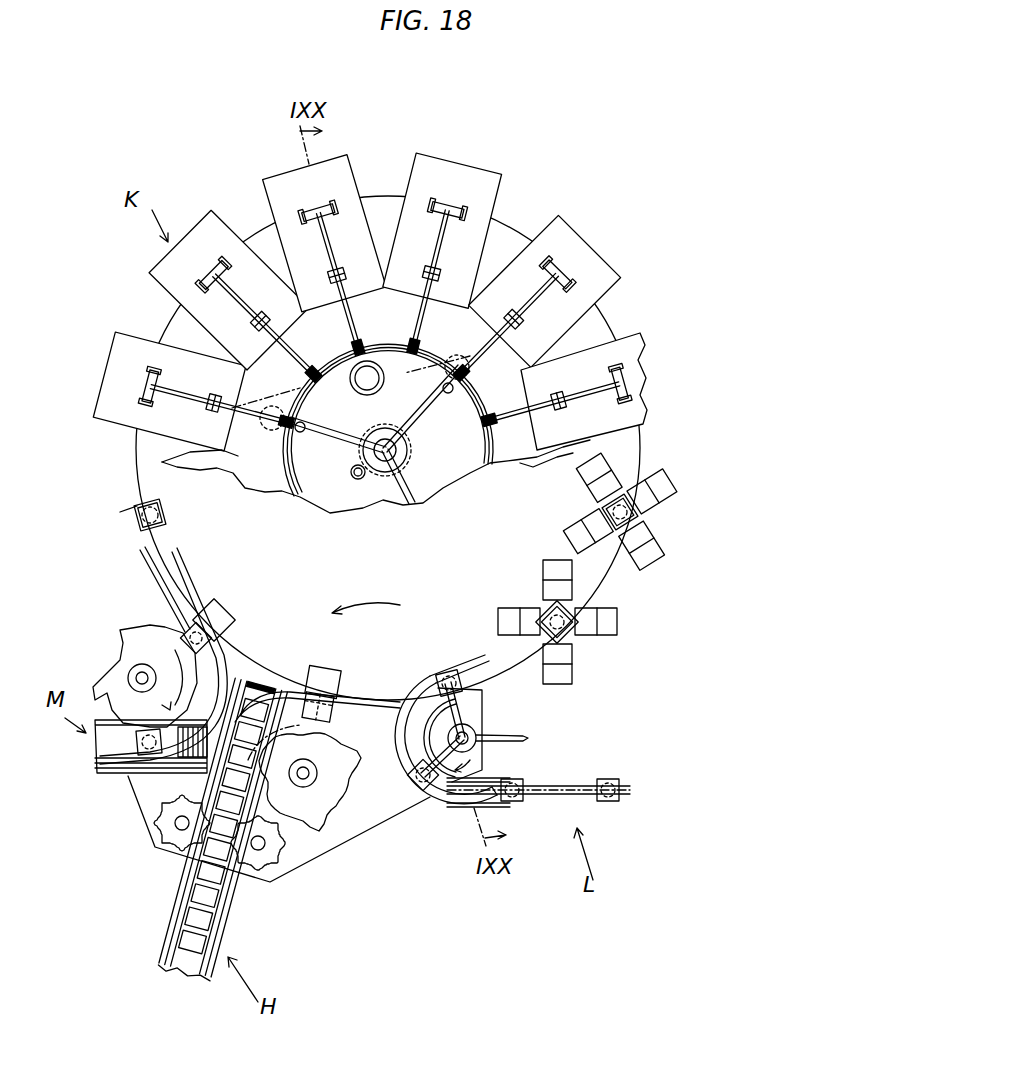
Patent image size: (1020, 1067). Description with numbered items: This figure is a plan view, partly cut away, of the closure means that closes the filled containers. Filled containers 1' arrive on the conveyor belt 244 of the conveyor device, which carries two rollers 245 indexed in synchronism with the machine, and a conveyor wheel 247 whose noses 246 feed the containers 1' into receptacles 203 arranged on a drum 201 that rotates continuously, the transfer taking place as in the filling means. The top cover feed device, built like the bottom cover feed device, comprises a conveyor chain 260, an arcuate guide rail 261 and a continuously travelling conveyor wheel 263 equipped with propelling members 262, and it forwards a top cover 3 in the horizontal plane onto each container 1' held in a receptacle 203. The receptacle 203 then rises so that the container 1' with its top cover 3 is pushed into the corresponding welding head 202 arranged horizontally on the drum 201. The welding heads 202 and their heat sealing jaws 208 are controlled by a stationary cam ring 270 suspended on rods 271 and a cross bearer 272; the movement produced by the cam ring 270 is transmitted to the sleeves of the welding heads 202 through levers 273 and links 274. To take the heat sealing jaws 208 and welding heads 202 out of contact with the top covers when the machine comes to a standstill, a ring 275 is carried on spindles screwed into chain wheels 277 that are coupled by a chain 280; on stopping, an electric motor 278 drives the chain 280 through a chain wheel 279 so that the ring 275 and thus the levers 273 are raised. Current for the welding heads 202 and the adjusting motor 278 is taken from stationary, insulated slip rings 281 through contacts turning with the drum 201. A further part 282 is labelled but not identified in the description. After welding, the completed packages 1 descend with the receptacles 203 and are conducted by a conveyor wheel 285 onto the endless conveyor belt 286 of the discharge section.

The drum 201 is at (147, 467).
The welding heads 202 is at (280, 196).
The receptacles 203 is at (223, 614).
The heat sealing jaws 208 is at (597, 488).
The conveyor belt 244 is at (185, 968).
The rollers 245 is at (172, 842).
The noses 246 is at (368, 770).
The conveyor wheel 247 is at (341, 800).
The conveyor chain 260 is at (574, 786).
The arcuate guide rail 261 is at (438, 805).
The propelling members 262 is at (465, 716).
The conveyor wheel 263 is at (478, 736).
The cam ring 270 is at (331, 490).
The rods 271 is at (303, 434).
The cross bearer 272 is at (341, 437).
The levers 273 is at (360, 313).
The links 274 is at (346, 234).
The ring 275 is at (291, 472).
The chain wheels 277 is at (272, 406).
The electric motor 278 is at (374, 392).
The chain wheel 279 is at (370, 360).
The chain 280 is at (407, 448).
The slip rings 281 is at (404, 460).
The pin 282 is at (366, 481).
The conveyor wheel 285 is at (126, 643).
The endless conveyor belt 286 is at (97, 770).
The sealed package 1 is at (161, 631).
The filled containers 1' is at (280, 821).
The top cover 3 is at (418, 766).